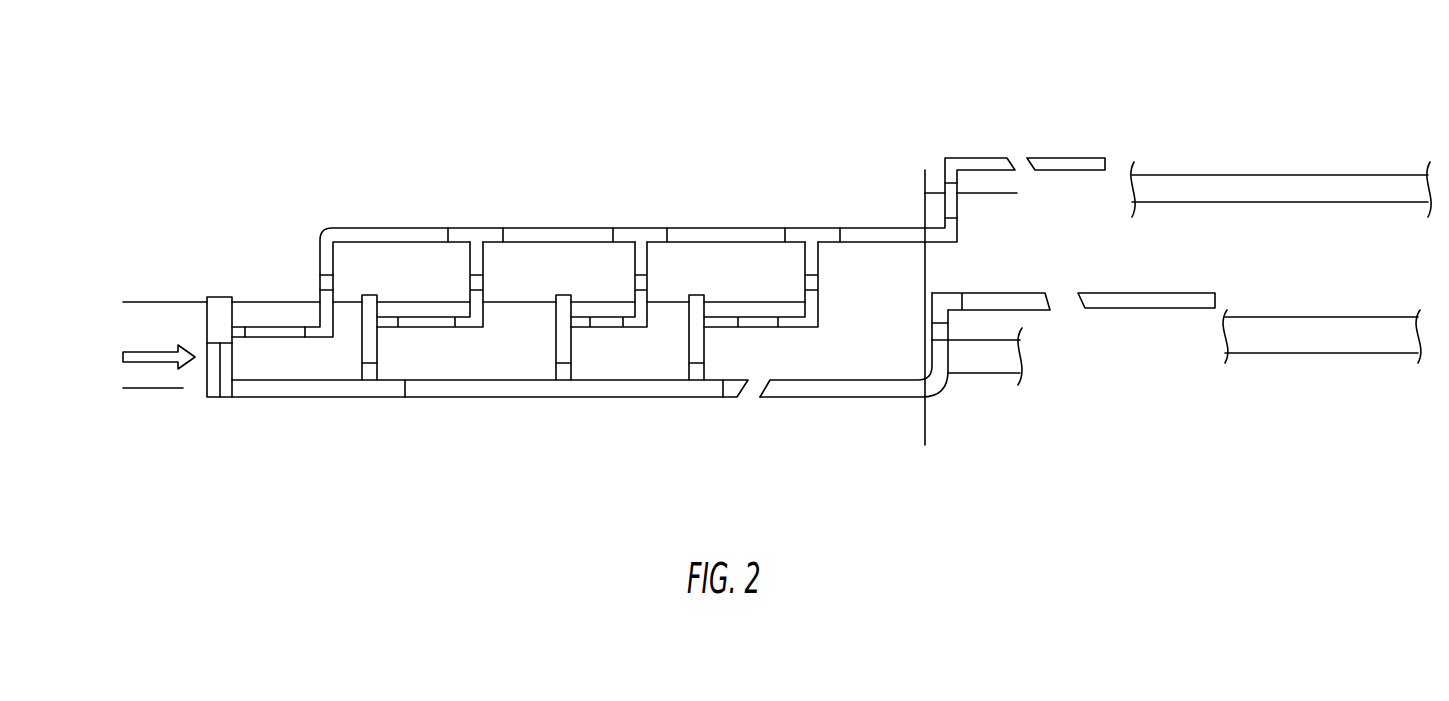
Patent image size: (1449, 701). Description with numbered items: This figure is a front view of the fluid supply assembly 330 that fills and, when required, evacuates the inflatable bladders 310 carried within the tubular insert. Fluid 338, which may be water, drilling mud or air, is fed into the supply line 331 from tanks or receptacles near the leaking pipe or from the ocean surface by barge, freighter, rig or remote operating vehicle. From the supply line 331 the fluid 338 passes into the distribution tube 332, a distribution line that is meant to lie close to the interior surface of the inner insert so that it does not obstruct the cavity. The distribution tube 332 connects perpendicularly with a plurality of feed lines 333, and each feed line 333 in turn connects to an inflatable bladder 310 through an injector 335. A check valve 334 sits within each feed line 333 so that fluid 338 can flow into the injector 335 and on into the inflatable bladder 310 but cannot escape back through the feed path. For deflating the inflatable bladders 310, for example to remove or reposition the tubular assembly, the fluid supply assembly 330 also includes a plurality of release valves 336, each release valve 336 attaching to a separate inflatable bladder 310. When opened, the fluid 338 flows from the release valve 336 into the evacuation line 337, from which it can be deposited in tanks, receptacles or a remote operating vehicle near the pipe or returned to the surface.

The inflatable bladder 310 is at (320, 285).
The fluid supply assembly 330 is at (883, 397).
The supply line 331 is at (1137, 310).
The distribution tube 332 is at (620, 397).
The feed lines 333 is at (556, 379).
The check valve 334 is at (219, 372).
The injector 335 is at (207, 300).
The release valve 336 is at (1100, 140).
The evacuation line 337 is at (1030, 157).
The fluid 338 is at (752, 390).